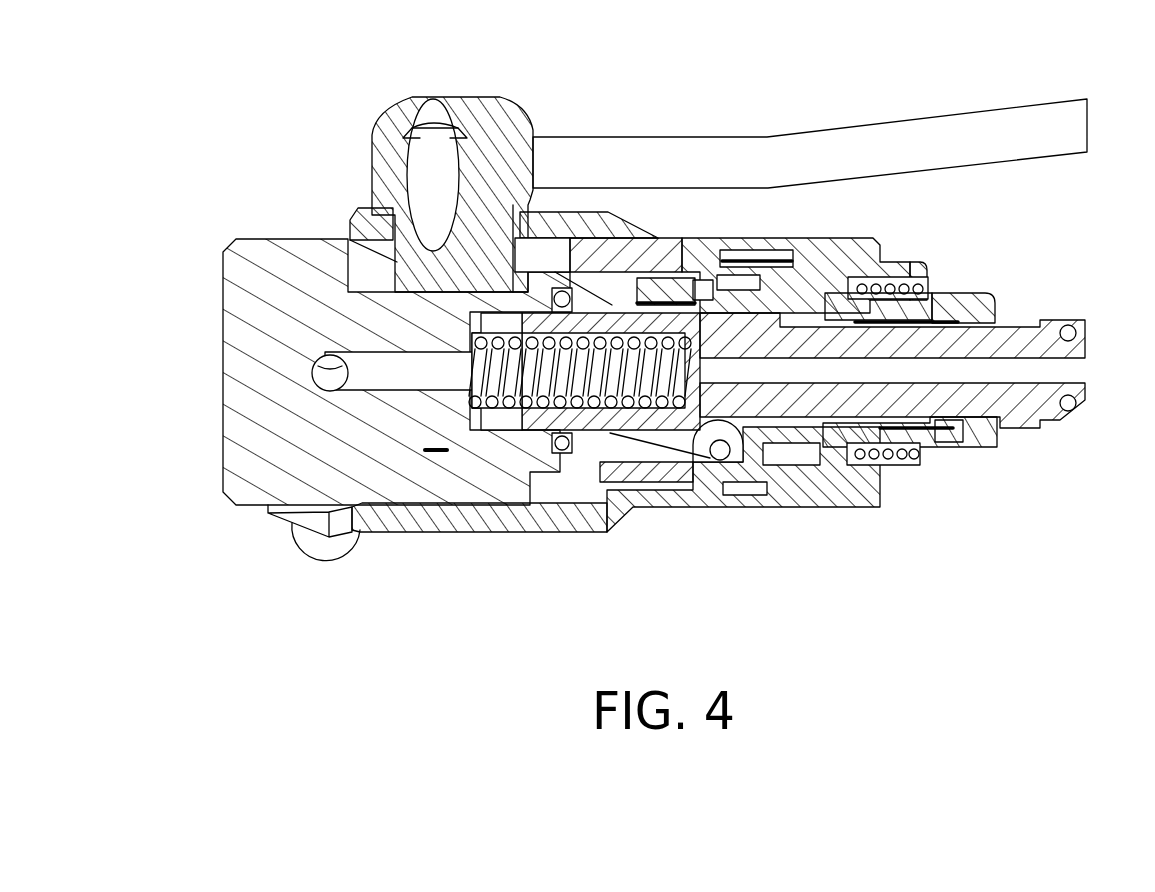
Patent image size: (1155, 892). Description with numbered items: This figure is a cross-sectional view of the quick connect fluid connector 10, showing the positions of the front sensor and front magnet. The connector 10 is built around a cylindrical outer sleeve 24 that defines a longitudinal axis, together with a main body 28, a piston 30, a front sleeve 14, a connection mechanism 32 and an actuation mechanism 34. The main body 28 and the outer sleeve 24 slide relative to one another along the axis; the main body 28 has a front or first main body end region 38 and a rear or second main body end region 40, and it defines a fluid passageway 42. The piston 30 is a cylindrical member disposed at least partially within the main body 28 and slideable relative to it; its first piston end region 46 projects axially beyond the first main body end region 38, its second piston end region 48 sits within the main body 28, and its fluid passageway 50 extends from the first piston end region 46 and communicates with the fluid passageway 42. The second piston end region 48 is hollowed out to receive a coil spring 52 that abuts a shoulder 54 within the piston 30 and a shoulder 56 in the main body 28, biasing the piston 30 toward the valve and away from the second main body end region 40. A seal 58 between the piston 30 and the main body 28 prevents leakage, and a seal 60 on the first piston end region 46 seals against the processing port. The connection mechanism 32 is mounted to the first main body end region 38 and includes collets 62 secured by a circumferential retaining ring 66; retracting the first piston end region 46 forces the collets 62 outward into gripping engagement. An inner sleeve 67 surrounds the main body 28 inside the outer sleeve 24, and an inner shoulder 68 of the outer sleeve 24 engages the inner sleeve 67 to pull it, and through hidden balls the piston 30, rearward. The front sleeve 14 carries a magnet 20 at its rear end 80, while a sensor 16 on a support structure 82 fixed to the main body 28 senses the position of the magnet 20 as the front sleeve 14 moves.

The quick connect fluid connector 10 is at (748, 573).
The front sleeve 14 is at (905, 282).
The sensor 16 is at (714, 257).
The magnet 20 is at (797, 264).
The outer sleeve 24 is at (583, 220).
The main body 28 is at (415, 468).
The piston 30 is at (950, 450).
The connection mechanism 32 is at (996, 294).
The actuation mechanism 34 is at (478, 80).
The first main body end region 38 is at (805, 462).
The second main body end region 40 is at (222, 465).
The fluid passageway 42 is at (362, 535).
The first piston end region 46 is at (1082, 393).
The second piston end region 48 is at (512, 430).
The fluid passageway 50 is at (1030, 415).
The spring 52 is at (610, 484).
The shoulder 54 is at (700, 445).
The shoulder 56 is at (488, 430).
The seal 58 is at (565, 455).
The seal 60 is at (1072, 330).
The collets 62 is at (972, 440).
The circumferential retaining ring 66 is at (858, 470).
The inner sleeve 67 is at (648, 268).
The inner shoulder 68 is at (688, 275).
The rear end 80 is at (778, 255).
The support structure 82 is at (752, 250).